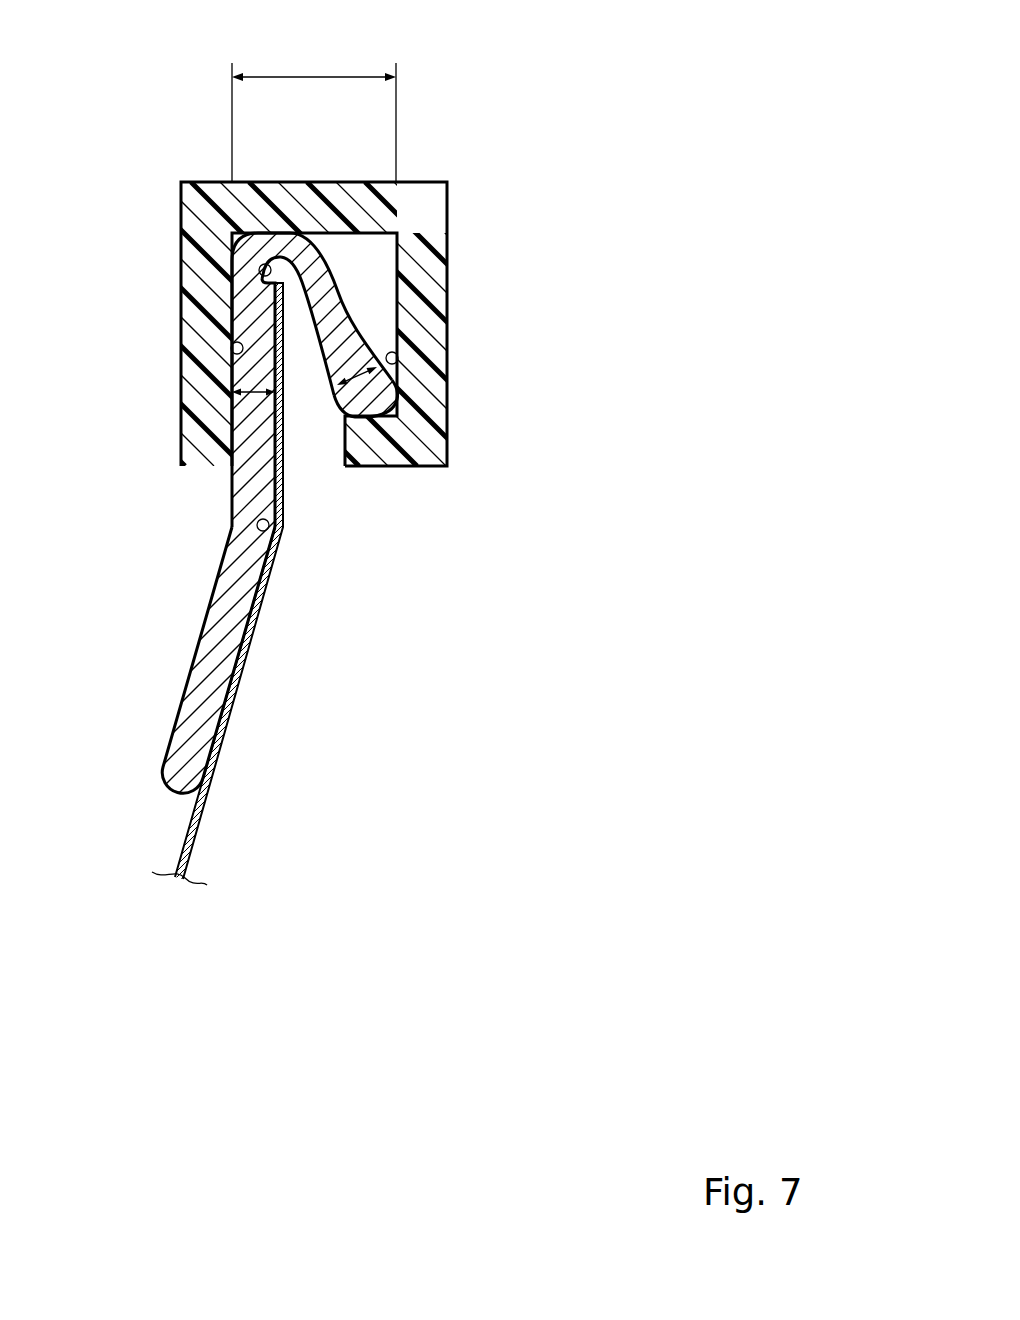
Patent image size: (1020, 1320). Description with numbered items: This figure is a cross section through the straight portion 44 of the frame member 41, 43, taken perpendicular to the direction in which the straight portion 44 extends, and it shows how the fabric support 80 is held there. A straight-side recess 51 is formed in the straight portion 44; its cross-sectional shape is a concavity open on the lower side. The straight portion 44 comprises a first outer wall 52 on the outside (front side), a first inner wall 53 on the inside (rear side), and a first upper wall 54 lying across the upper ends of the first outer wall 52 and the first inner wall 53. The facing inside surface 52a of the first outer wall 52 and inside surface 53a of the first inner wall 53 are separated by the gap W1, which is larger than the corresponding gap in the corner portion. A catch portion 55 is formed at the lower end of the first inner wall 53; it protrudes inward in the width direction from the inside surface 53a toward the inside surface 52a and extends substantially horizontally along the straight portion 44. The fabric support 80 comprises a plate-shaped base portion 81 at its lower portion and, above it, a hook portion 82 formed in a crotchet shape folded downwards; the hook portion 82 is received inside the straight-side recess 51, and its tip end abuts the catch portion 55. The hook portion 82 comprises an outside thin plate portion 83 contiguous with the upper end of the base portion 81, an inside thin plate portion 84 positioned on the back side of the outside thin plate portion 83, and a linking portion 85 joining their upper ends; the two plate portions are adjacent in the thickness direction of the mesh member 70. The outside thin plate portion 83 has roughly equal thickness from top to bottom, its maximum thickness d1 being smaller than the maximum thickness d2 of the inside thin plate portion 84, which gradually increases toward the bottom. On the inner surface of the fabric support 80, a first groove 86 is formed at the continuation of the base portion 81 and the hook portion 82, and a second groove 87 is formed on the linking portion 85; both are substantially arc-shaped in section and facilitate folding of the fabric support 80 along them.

The frame member 41 is at (437, 117).
The frame member (holder) 43 is at (304, 272).
The straight portion 44 is at (205, 182).
The straight-side recess 51 is at (315, 430).
The first outer wall 52 is at (197, 285).
The inside surface of first outer wall 52a is at (235, 343).
The first inner wall 53 is at (437, 298).
The inside surface of first inner wall 53a is at (397, 372).
The first upper wall 54 is at (361, 200).
The catch portion 55 is at (366, 455).
The mesh member 70 is at (223, 703).
The fabric support 80 is at (167, 743).
The base portion 81 is at (203, 655).
The hook portion 82 is at (333, 280).
The outside thin plate portion 83 is at (250, 483).
The inside thin plate portion 84 is at (352, 342).
The linking portion 85 is at (266, 253).
The first groove 86 is at (257, 523).
The second groove 87 is at (258, 272).
The gap in straight-side recess W1 is at (314, 113).
The maximum thickness of outside thin plate portion d1 is at (252, 395).
The maximum thickness of inside thin plate portion d2 is at (372, 380).